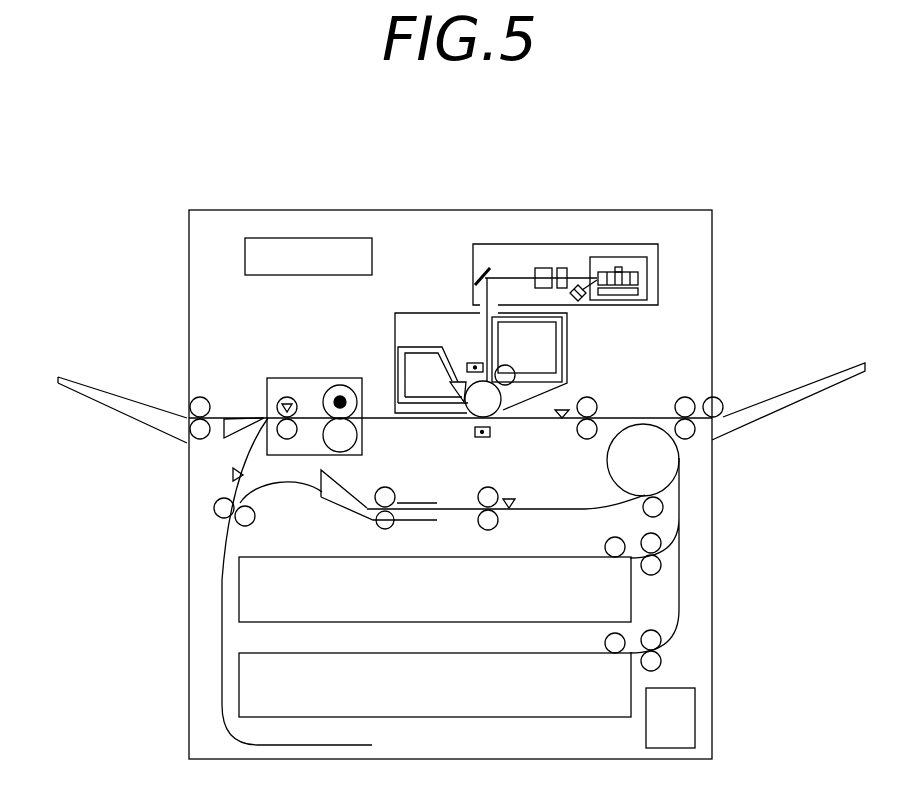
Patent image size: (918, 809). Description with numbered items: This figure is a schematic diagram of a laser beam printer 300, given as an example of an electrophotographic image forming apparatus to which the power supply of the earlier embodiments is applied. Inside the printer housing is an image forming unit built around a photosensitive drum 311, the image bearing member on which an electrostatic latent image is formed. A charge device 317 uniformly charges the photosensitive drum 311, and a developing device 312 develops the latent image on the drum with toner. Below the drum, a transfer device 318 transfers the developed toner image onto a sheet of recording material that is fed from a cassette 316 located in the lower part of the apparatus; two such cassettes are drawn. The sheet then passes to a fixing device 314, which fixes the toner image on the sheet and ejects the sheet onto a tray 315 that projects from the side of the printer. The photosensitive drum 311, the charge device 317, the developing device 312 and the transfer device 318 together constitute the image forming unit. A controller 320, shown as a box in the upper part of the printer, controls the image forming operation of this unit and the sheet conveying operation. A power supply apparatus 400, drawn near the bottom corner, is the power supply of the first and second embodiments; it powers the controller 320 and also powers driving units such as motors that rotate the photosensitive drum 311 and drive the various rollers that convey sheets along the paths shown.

The laser beam printer 300 is at (610, 210).
The photosensitive drum 311 is at (493, 402).
The developing device 312 is at (508, 373).
The fixing device 314 is at (313, 378).
The tray 315 is at (110, 394).
The cassette 316 is at (612, 602).
The charge device 317 is at (478, 363).
The transfer device 318 is at (490, 432).
The controller 320 is at (287, 276).
The power supply apparatus 400 is at (645, 723).